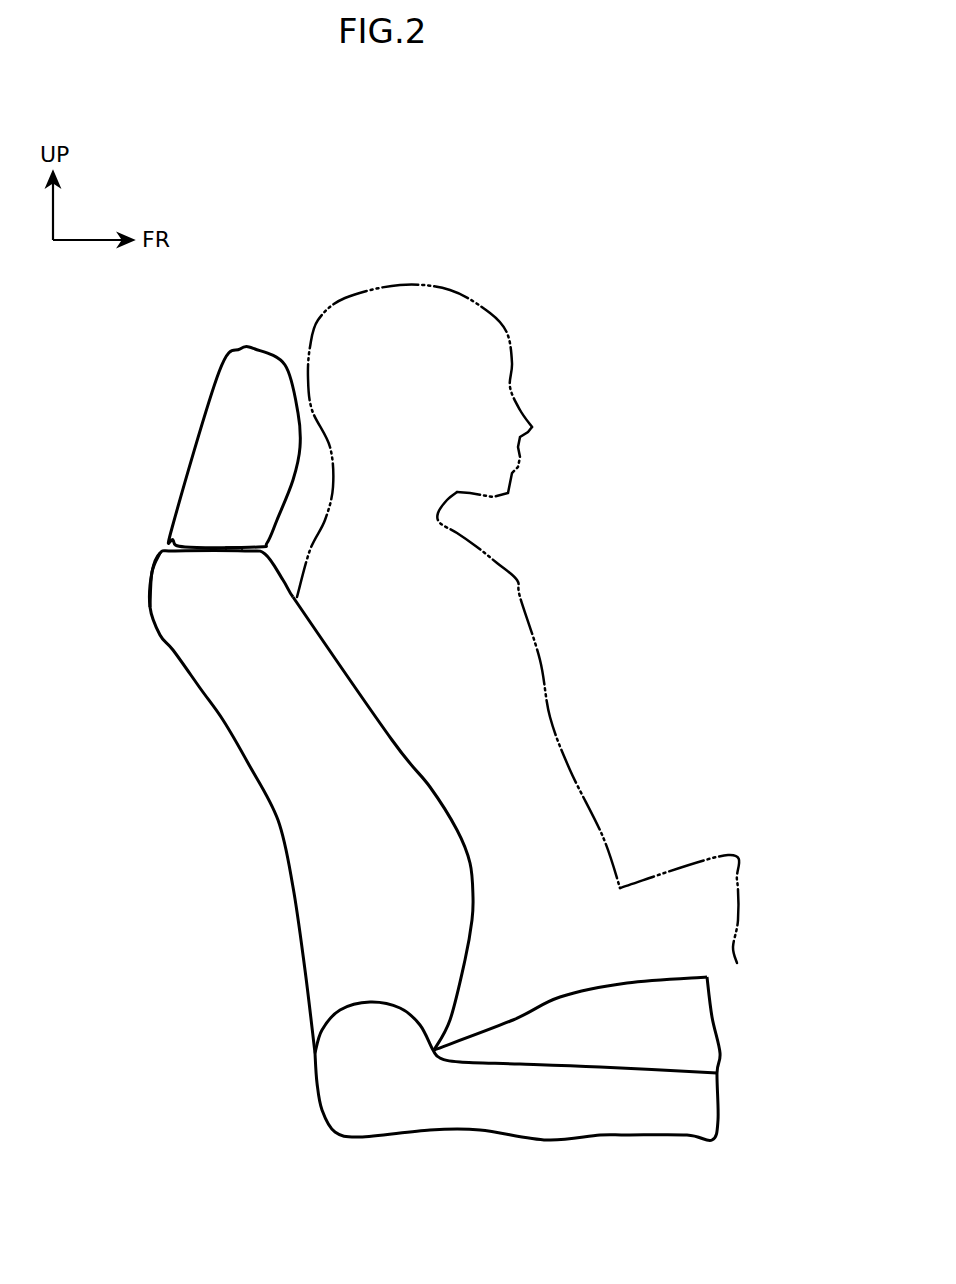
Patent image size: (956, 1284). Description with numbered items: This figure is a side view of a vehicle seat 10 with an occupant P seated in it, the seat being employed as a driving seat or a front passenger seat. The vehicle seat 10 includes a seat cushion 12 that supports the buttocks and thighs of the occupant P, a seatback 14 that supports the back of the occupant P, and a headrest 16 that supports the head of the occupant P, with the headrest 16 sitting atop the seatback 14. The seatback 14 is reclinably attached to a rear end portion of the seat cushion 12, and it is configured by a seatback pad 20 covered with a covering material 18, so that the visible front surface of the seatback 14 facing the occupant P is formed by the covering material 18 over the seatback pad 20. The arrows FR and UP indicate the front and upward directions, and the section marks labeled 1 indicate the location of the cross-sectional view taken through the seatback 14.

The vehicle seat 10 is at (228, 897).
The seat cushion 12 is at (655, 978).
The seatback 14 is at (248, 763).
The headrest 16 is at (205, 413).
The covering material 18 is at (367, 702).
The seatback pad 20 is at (330, 817).
The occupant P is at (522, 596).
The section line 1- 1 is at (128, 643).